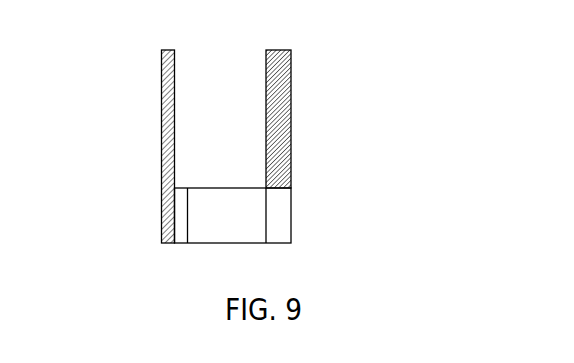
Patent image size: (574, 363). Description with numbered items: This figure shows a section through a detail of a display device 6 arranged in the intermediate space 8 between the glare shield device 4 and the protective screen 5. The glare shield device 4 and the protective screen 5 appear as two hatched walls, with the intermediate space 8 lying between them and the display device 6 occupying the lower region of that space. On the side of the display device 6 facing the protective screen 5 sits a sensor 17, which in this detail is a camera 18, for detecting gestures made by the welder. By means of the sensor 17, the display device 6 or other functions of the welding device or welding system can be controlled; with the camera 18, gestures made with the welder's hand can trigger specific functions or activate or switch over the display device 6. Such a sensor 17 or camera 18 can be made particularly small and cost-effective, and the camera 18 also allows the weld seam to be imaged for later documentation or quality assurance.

The glare shield device 4 is at (280, 111).
The protective screen 5 is at (162, 103).
The display device 6 is at (228, 232).
The intermediate space 8 is at (197, 123).
The sensor 17 is at (181, 222).
The camera 18 is at (181, 215).